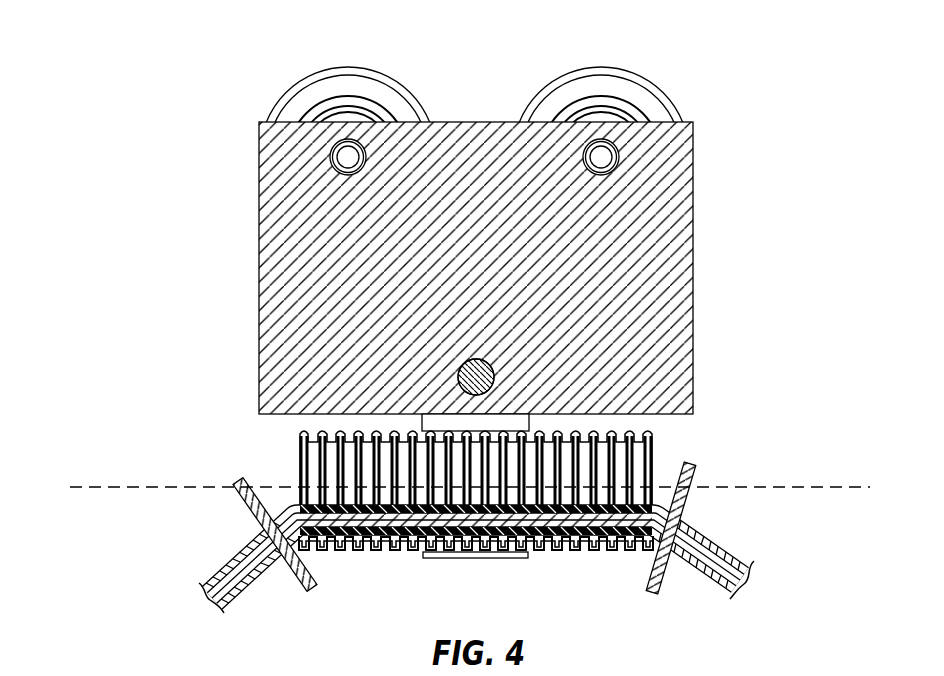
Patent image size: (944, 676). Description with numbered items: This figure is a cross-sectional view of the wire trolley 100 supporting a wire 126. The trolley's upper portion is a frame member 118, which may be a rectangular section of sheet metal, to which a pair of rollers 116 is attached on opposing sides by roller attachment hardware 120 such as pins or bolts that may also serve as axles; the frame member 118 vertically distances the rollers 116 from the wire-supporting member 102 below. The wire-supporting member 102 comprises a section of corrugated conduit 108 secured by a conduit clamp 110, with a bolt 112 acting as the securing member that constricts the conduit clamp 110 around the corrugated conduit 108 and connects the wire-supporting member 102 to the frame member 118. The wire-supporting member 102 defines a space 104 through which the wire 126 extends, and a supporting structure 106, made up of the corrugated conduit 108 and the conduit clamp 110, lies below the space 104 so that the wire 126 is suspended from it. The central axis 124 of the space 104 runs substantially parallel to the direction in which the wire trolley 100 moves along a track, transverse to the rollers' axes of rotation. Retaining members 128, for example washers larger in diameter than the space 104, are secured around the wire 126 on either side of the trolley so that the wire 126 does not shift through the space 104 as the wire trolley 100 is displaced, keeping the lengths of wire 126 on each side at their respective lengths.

The wire trolley 100 is at (470, 339).
The wire-supporting member 102 is at (522, 570).
The space 104 is at (640, 466).
The supporting structure 106 is at (470, 568).
The section of corrugated conduit 108 is at (317, 452).
The conduit clamp 110 is at (517, 420).
The bolt 112 is at (478, 370).
The rollers 116 is at (290, 107).
The frame member 118 is at (668, 272).
The roller attachment hardware 120 is at (333, 150).
The central axis 124 is at (795, 487).
The wire 126 is at (712, 538).
The retaining members 128 is at (242, 497).